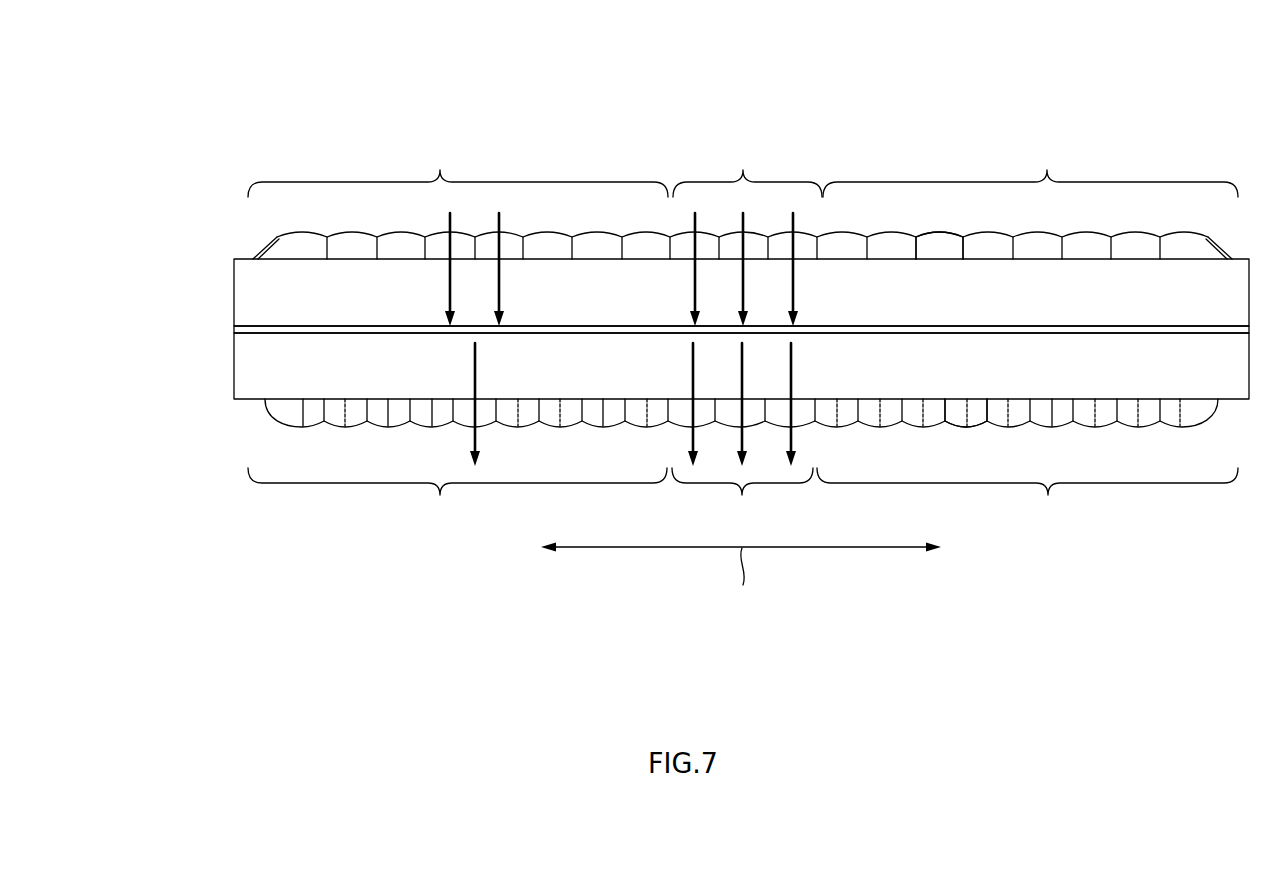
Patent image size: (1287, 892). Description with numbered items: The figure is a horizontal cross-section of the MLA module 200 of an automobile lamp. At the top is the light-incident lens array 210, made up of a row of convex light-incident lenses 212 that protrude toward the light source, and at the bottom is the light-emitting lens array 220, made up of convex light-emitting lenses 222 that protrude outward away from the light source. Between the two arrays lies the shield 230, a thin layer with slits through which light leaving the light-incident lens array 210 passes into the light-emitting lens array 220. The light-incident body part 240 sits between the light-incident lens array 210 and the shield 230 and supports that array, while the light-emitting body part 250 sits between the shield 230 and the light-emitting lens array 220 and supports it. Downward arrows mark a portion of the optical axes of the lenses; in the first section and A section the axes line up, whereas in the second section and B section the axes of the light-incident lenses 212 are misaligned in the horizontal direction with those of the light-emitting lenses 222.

The MLA module 200 is at (238, 118).
The light-incident lens array 210 is at (696, 189).
The light-incident lens 212 is at (940, 248).
The light-emitting lens array 220 is at (693, 472).
The light-emitting lens 222 is at (978, 412).
The shield 230 is at (248, 328).
The light-incident body part 240 is at (245, 290).
The light-emitting body part 250 is at (245, 368).